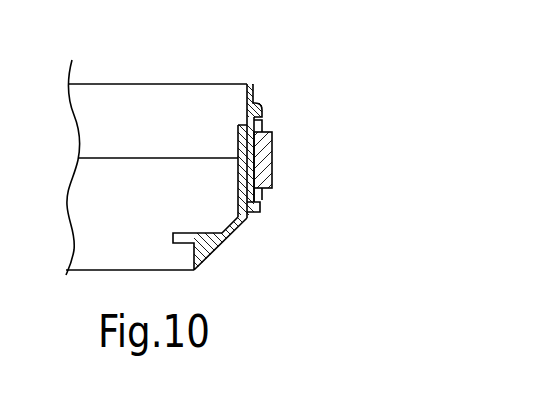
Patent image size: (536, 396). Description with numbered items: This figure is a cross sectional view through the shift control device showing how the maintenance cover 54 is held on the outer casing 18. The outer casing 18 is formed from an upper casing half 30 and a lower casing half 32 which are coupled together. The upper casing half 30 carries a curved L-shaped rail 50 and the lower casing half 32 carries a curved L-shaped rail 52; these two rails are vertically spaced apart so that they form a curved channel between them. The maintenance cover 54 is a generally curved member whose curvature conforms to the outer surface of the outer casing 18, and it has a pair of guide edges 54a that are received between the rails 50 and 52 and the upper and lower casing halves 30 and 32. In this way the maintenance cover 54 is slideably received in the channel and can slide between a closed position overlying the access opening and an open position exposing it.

The upper casing half 30 is at (190, 85).
The outer casing 18 is at (255, 98).
The curved L-shaped rail 50 is at (262, 110).
The curved L-shaped rail 52 is at (260, 210).
The maintenance cover 54 is at (273, 157).
The guide edges 54a is at (266, 118).
The lower casing half 32 is at (237, 237).